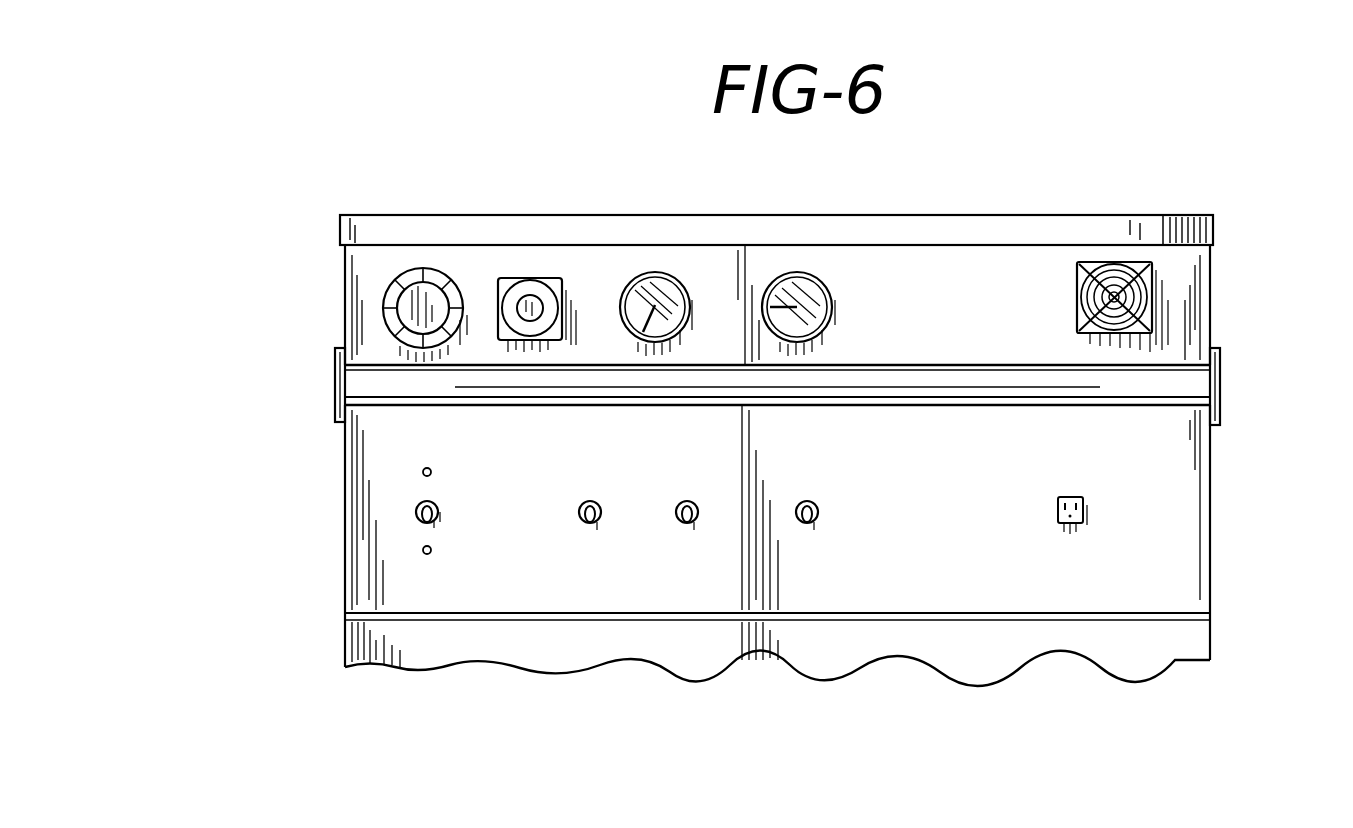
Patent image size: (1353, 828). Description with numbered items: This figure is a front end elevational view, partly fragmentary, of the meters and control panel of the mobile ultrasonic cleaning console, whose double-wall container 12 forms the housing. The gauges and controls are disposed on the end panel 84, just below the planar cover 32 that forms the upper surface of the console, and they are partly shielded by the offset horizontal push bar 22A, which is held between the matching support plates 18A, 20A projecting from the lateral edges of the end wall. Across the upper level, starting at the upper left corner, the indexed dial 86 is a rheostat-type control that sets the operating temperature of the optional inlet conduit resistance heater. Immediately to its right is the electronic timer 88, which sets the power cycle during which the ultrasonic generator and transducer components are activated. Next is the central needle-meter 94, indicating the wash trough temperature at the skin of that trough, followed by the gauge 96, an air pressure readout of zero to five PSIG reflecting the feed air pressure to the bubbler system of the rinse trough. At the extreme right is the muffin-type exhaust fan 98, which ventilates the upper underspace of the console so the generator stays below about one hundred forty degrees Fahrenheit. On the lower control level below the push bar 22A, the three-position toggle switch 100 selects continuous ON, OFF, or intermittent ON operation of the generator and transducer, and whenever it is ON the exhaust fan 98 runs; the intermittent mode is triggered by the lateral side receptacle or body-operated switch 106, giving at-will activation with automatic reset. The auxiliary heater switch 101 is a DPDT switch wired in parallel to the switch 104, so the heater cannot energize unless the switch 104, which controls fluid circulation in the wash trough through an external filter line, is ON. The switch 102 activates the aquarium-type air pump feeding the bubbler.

The double-wall container 12 is at (1222, 555).
The support plate 18A is at (1222, 412).
The bar support plate 20A is at (335, 418).
The push bar 22A is at (1165, 378).
The planar cover 32 is at (1163, 215).
The end panel 84 is at (935, 295).
The indexed dial 86 is at (423, 268).
The electronic timer 88 is at (530, 278).
The needle-meter 94 is at (653, 272).
The gauge 96 is at (797, 272).
The exhaust fan 98 is at (1110, 262).
The three-position toggle switch 100 is at (415, 512).
The auxiliary heater switch 101 is at (600, 510).
The switch 102 is at (697, 510).
The switch 104 is at (818, 512).
The body-operated switch 106 is at (1083, 497).